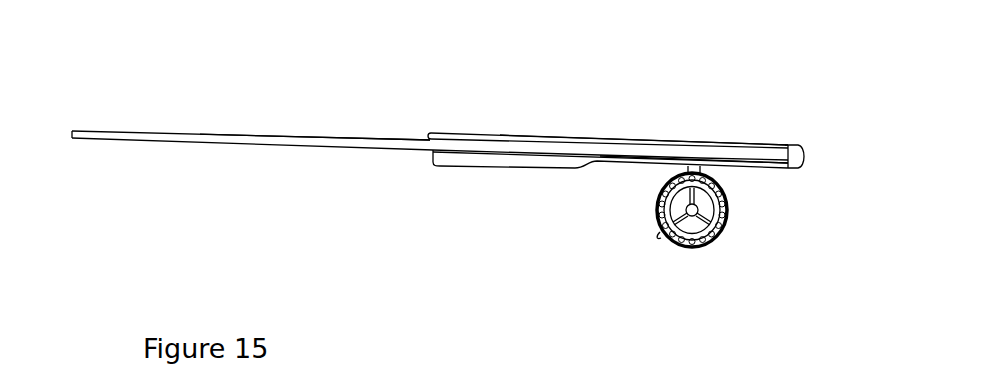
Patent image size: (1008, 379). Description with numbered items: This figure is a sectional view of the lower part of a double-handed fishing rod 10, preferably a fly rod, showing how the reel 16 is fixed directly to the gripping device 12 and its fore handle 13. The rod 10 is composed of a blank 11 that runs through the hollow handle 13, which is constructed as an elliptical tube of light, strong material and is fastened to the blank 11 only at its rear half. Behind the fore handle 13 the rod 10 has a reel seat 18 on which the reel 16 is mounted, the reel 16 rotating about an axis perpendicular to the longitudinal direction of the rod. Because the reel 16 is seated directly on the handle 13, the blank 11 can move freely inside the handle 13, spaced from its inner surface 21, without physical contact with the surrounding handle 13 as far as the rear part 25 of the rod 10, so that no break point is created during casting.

The fishing rod 10 is at (142, 135).
The blank 11 is at (350, 142).
The gripping device 12 is at (562, 137).
The fore handle 13 is at (465, 134).
The reel 16 is at (660, 235).
The reel seat 18 is at (673, 160).
The inner surface 21 is at (447, 158).
The rear part 25 is at (788, 169).